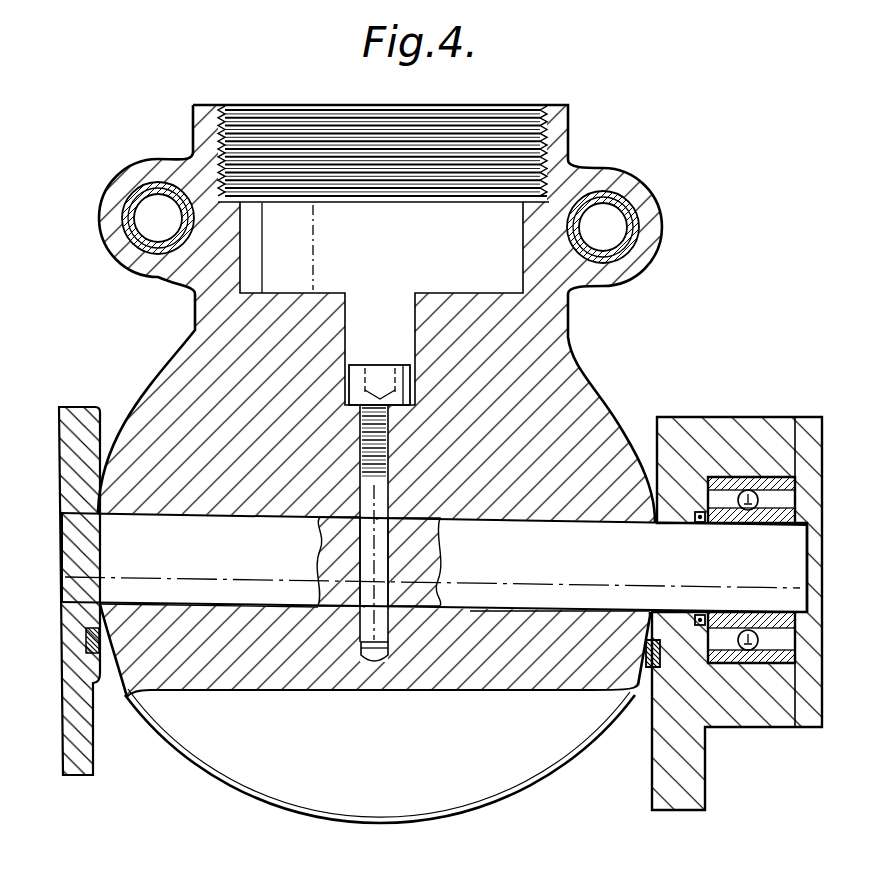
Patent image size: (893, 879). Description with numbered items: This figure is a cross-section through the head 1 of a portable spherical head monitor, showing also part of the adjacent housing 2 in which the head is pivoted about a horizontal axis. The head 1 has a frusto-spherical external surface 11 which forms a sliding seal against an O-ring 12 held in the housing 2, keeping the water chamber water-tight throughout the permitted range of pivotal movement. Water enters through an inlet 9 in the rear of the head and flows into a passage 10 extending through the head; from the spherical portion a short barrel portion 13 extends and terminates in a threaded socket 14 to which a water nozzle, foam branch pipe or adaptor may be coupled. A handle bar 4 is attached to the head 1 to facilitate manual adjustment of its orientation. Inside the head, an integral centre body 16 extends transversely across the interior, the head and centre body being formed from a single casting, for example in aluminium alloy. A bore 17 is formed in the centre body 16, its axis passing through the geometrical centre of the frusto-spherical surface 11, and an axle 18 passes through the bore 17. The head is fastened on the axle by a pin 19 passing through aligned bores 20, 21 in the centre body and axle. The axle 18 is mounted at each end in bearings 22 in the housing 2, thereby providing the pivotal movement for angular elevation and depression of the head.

The head 1 is at (86, 221).
The housing 2 is at (750, 728).
The handle bar 4 is at (627, 207).
The inlet 9 is at (266, 783).
The passage 10 is at (420, 261).
The frusto-spherical external surface 11 is at (135, 418).
The O-ring 12 is at (643, 758).
The barrel portion 13 is at (568, 322).
The threaded socket 14 is at (537, 112).
The centre body 16 is at (190, 468).
The bore 17 is at (526, 600).
The axle 18 is at (256, 592).
The pin 19 is at (404, 363).
The bore 20 is at (352, 517).
The bore 21 is at (342, 642).
The bearings 22 is at (748, 492).